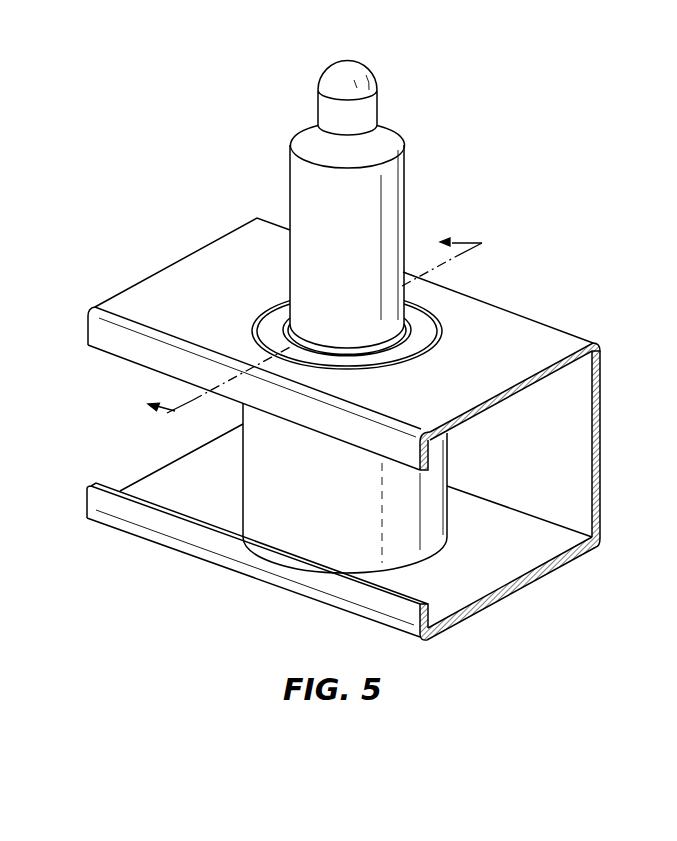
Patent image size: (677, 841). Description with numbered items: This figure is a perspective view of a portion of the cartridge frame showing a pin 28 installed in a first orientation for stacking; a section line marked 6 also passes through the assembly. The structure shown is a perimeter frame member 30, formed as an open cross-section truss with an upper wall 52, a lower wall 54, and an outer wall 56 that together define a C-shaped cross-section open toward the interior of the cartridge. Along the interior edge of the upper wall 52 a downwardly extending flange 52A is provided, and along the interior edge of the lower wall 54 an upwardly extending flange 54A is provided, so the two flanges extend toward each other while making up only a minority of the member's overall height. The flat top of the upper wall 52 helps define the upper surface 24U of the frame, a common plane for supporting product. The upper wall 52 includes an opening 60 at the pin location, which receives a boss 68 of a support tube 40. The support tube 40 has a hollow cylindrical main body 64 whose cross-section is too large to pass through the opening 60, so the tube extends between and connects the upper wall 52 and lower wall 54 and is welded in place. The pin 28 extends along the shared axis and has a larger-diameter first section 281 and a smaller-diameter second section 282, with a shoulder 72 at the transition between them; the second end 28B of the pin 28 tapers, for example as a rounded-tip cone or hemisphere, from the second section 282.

The pin 28 is at (347, 193).
The second end 28B is at (333, 75).
The second section 282 is at (371, 102).
The first section 281 is at (290, 279).
The shoulder 72 is at (298, 141).
The opening 60 is at (255, 320).
The boss 68 is at (417, 336).
The perimeter frame member 30 is at (548, 282).
The upper wall 52 is at (325, 344).
The downwardly extending flange 52A is at (115, 350).
The upper surface 24U is at (529, 361).
The outer wall 56 is at (581, 441).
The lower wall 54 is at (517, 570).
The upwardly extending flange 54A is at (108, 488).
The support tube 40 is at (287, 517).
The main body 64 is at (298, 523).
The section line 6- 6 is at (307, 318).